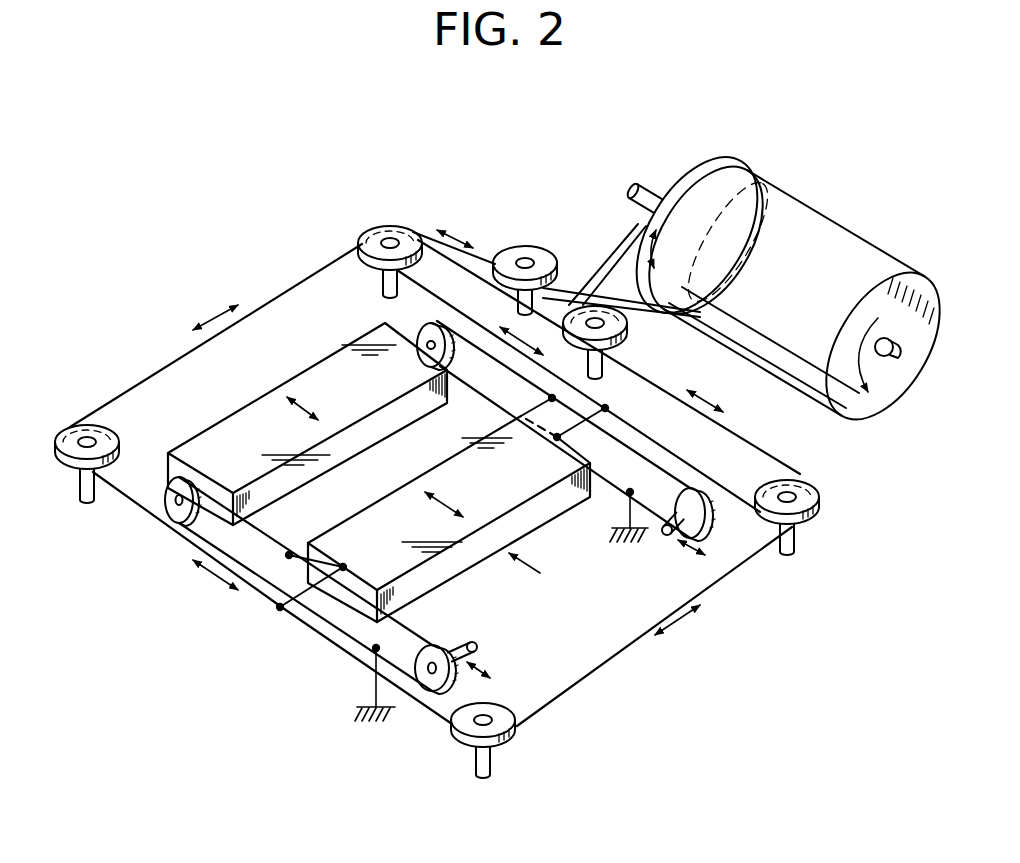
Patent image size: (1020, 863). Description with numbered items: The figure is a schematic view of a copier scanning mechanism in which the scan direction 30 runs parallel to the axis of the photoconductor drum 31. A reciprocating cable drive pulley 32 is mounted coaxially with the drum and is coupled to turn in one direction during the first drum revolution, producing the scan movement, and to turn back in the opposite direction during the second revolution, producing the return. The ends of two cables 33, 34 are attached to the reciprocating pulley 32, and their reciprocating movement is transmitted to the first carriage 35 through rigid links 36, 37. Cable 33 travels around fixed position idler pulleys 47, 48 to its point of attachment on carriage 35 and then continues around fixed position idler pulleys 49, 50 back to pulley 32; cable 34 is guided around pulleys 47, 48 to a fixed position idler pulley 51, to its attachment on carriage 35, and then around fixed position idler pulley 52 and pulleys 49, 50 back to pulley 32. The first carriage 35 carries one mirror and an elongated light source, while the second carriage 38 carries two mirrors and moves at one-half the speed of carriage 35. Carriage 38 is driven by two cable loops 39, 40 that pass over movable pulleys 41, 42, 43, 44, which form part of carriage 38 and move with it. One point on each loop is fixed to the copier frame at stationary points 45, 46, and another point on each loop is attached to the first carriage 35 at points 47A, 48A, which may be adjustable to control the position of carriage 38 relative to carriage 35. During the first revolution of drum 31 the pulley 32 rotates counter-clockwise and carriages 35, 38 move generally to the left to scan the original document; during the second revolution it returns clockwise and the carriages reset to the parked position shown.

The scan direction 30 is at (514, 560).
The photoconductor drum 31 is at (812, 230).
The reciprocating cable drive pulley 32 is at (690, 174).
The cable 33 is at (582, 300).
The cable 34 is at (563, 293).
The first carriage 35 is at (447, 478).
The rigid link 36 is at (310, 598).
The rigid link 37 is at (575, 427).
The second carriage 38 is at (318, 372).
The cable loop 39 is at (662, 513).
The cable loop 40 is at (197, 536).
The movable pulley 41 is at (710, 513).
The movable pulley 42 is at (437, 645).
The movable pulley 43 is at (420, 333).
The movable pulley 44 is at (165, 492).
The stationary point 45 is at (373, 686).
The stationary point 46 is at (626, 512).
The fixed position idler pulley 47 is at (525, 250).
The attachment point 47A is at (549, 397).
The fixed position idler pulley 48 is at (390, 227).
The attachment point 48A is at (289, 552).
The fixed position idler pulley 49 is at (807, 500).
The fixed position idler pulley 50 is at (627, 333).
The fixed position idler pulley 51 is at (90, 432).
The fixed position idler pulley 52 is at (463, 740).